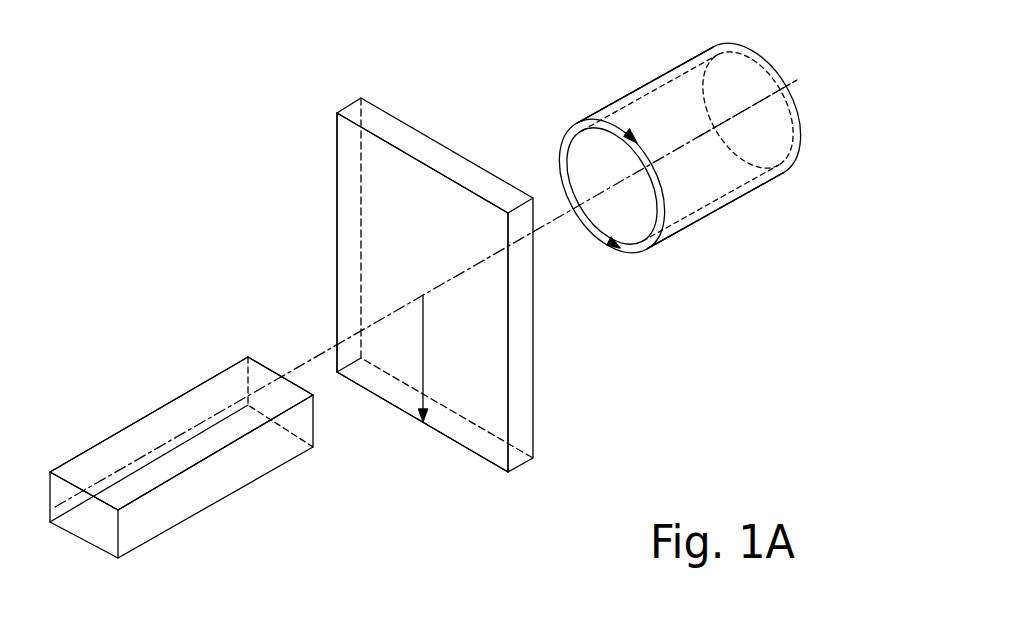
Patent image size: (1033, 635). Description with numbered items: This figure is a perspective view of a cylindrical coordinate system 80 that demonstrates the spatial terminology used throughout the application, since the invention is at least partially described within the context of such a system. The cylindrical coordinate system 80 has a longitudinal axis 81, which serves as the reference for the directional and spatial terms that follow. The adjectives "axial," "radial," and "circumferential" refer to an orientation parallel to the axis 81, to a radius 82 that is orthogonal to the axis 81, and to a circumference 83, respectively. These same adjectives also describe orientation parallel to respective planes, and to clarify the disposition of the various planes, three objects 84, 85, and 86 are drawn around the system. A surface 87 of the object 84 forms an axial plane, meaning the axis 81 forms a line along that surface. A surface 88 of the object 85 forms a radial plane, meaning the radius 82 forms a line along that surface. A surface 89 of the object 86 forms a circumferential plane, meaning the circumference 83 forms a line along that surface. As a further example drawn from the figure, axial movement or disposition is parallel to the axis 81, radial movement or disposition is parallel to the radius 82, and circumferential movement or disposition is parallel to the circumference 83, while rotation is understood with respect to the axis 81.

The cylindrical coordinate system 80 is at (293, 160).
The longitudinal axis 81 is at (797, 80).
The radius 82 is at (423, 352).
The circumference 83 is at (562, 145).
The object 84 is at (145, 543).
The object 85 is at (543, 464).
The object 86 is at (712, 223).
The surface 87 is at (140, 438).
The surface 88 is at (352, 240).
The surface 89 is at (643, 86).